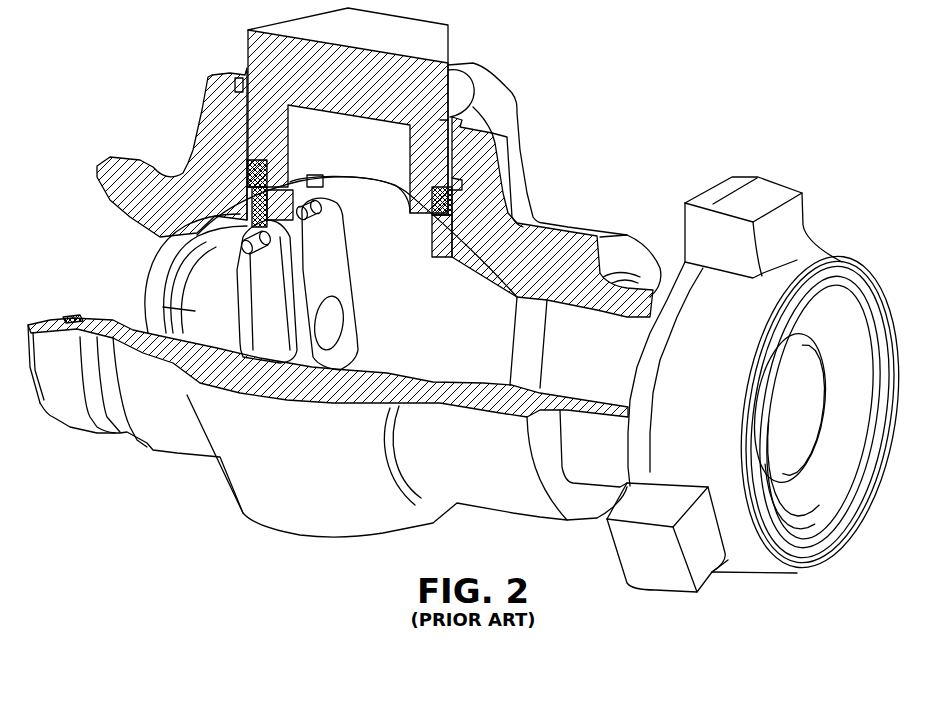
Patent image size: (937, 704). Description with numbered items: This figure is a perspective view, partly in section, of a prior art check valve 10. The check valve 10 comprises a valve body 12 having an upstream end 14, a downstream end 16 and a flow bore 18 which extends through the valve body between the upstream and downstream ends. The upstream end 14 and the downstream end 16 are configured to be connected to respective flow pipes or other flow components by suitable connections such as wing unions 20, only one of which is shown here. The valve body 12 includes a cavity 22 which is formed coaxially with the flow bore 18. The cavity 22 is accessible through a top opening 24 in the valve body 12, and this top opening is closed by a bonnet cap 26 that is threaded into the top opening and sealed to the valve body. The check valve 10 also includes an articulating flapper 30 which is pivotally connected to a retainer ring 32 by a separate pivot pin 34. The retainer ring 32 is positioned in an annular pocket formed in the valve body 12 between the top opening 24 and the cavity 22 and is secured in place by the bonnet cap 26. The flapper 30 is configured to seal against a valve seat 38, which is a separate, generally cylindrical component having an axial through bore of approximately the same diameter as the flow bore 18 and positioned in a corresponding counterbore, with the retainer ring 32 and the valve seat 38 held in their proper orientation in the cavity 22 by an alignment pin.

The check valve 10 is at (731, 100).
The valve body 12 is at (586, 225).
The upstream end 14 is at (81, 422).
The downstream end 16 is at (803, 485).
The flow bore 18 is at (604, 356).
The wing union 20 is at (755, 557).
The cavity 22 is at (440, 329).
The top opening 24 is at (452, 163).
The bonnet cap 26 is at (255, 57).
The articulating flapper 30 is at (267, 340).
The retainer ring 32 is at (363, 207).
The pivot pin 34 is at (293, 220).
The valve seat 38 is at (195, 311).